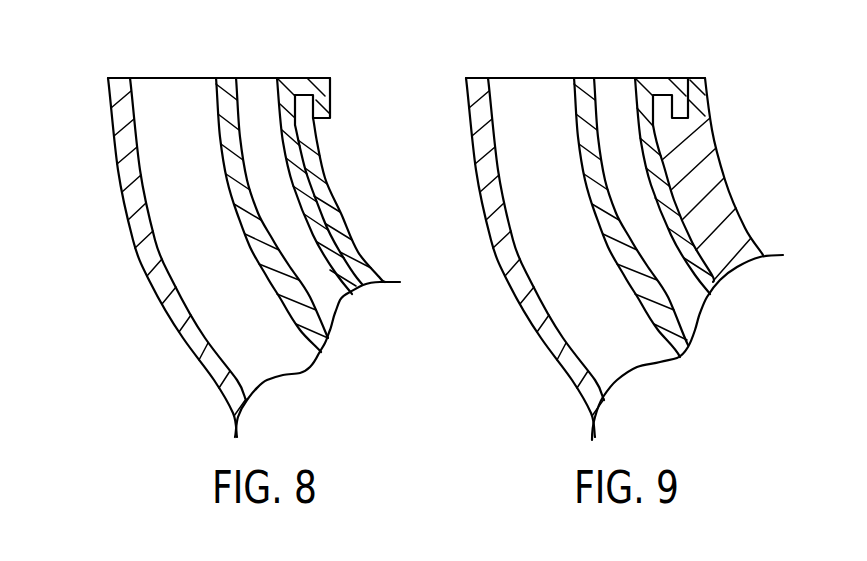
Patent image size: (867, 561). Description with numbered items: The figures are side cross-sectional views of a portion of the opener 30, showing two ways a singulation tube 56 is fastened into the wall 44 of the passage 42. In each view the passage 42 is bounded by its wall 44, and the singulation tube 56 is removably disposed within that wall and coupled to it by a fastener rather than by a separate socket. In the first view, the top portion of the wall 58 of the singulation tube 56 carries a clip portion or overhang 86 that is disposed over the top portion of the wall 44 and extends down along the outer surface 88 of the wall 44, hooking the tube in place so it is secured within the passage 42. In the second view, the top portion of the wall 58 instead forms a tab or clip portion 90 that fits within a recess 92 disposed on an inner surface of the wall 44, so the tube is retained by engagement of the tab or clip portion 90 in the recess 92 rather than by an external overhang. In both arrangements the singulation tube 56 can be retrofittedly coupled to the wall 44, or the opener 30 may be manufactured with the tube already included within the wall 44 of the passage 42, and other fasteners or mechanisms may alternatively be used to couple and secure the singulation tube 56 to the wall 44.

In FIG. 8, the opener 30 is at (120, 51).
In FIG. 9, the opener 30 is at (467, 51).
In FIG. 8, the passage 42 is at (173, 104).
In FIG. 9, the passage 42 is at (531, 104).
In FIG. 8, the wall 44 is at (168, 302).
In FIG. 9, the wall 44 is at (535, 257).
In FIG. 8, the singulation tube 56 is at (255, 98).
In FIG. 9, the singulation tube 56 is at (631, 191).
In FIG. 8, the wall 58 is at (322, 231).
In FIG. 9, the wall 58 is at (657, 175).
In FIG. 8, the clip portion or overhang 86 is at (330, 86).
In FIG. 8, the outer surface 88 is at (353, 256).
In FIG. 9, the tab or clip portion 90 is at (658, 78).
In FIG. 9, the recess 92 is at (693, 126).